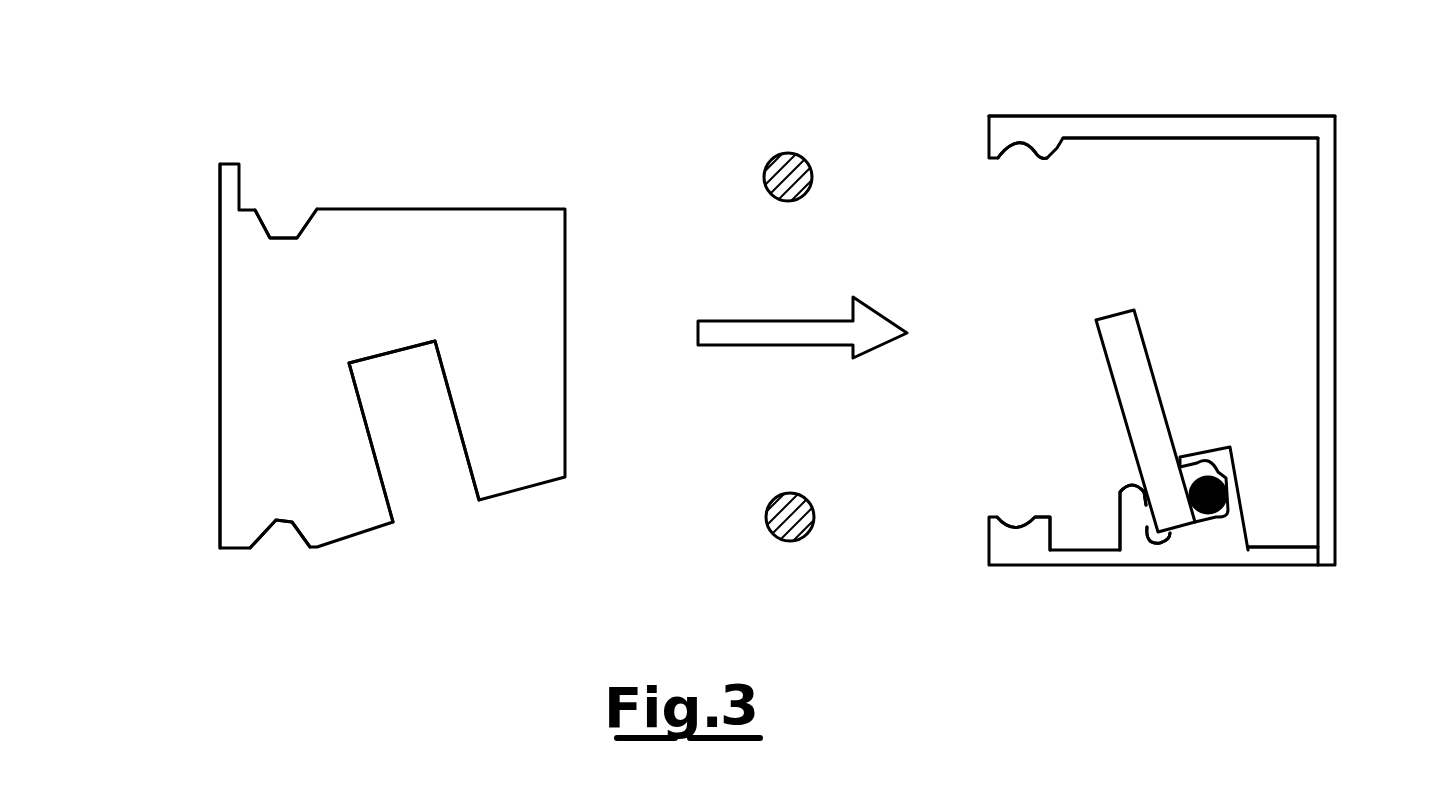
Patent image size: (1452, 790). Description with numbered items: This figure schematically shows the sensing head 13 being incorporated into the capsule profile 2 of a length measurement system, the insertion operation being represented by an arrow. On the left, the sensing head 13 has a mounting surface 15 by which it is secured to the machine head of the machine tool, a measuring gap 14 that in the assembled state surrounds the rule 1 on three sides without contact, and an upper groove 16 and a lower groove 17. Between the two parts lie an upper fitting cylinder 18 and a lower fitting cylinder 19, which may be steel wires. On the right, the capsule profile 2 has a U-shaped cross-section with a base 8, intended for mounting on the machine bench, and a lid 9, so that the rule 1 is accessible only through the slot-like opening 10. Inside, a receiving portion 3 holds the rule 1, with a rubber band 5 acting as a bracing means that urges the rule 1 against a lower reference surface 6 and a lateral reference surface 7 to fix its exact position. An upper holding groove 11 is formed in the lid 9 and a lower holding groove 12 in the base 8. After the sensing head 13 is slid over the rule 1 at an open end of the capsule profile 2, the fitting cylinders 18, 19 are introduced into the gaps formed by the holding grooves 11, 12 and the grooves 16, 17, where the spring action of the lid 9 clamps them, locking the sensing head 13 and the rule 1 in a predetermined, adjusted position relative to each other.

The rule 1 is at (1133, 330).
The capsule profile 2 is at (1330, 355).
The receiving portion 3 is at (1228, 447).
The rubber band 5 is at (1227, 478).
The lower reference surface 6 is at (1170, 537).
The lateral reference surface 7 is at (1145, 500).
The base 8 is at (1230, 555).
The lid 9 is at (1197, 122).
The opening 10 is at (998, 377).
The upper holding groove 11 is at (1028, 145).
The lower holding groove 12 is at (1010, 527).
The sensing head 13 is at (508, 224).
The measuring gap 14 is at (420, 393).
The mounting surface 15 is at (220, 425).
The upper groove 16 is at (302, 222).
The lower groove 17 is at (298, 538).
The upper fitting cylinder 18 is at (807, 158).
The lower fitting cylinder 19 is at (808, 522).